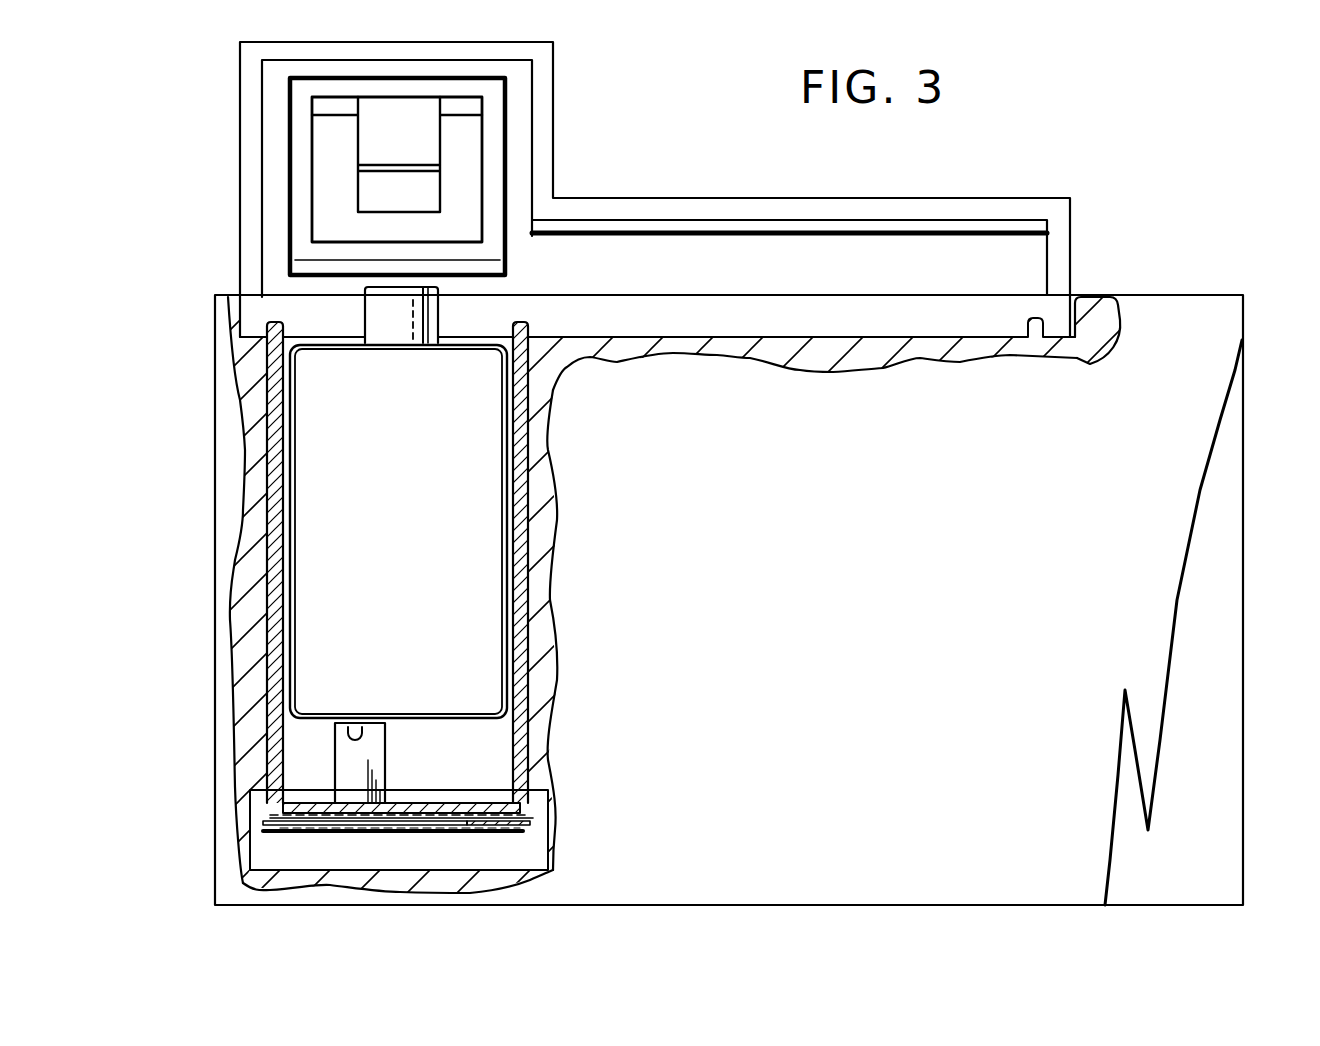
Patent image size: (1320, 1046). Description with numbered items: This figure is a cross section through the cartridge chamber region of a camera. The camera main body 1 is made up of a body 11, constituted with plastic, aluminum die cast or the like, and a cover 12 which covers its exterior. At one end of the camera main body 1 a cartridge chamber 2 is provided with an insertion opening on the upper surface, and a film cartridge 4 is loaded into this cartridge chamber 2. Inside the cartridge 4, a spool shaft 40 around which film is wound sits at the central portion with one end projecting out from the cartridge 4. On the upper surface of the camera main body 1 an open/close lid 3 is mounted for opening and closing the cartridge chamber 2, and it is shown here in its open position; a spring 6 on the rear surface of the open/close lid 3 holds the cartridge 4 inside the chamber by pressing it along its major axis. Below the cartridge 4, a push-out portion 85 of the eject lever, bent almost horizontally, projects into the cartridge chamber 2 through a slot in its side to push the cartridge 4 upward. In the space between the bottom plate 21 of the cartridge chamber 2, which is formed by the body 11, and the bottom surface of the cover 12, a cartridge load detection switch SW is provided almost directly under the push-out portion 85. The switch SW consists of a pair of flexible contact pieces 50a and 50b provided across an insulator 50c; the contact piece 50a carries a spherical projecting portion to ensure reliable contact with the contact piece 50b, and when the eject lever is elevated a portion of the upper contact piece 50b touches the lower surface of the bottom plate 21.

The camera main body 1 is at (1244, 415).
The cartridge chamber 2 is at (287, 572).
The open/close lid 3 is at (515, 42).
The film cartridge 4 is at (305, 467).
The spring 6 is at (367, 140).
The body 11 is at (272, 513).
The cover 12 is at (215, 395).
The bottom plate 21 is at (440, 802).
The spool shaft 40 is at (438, 318).
The contact piece 50a is at (457, 837).
The contact piece 50b is at (414, 827).
The insulator 50c is at (533, 818).
The push-out portion 85 is at (366, 725).
The cartridge load detection switch SW is at (358, 835).